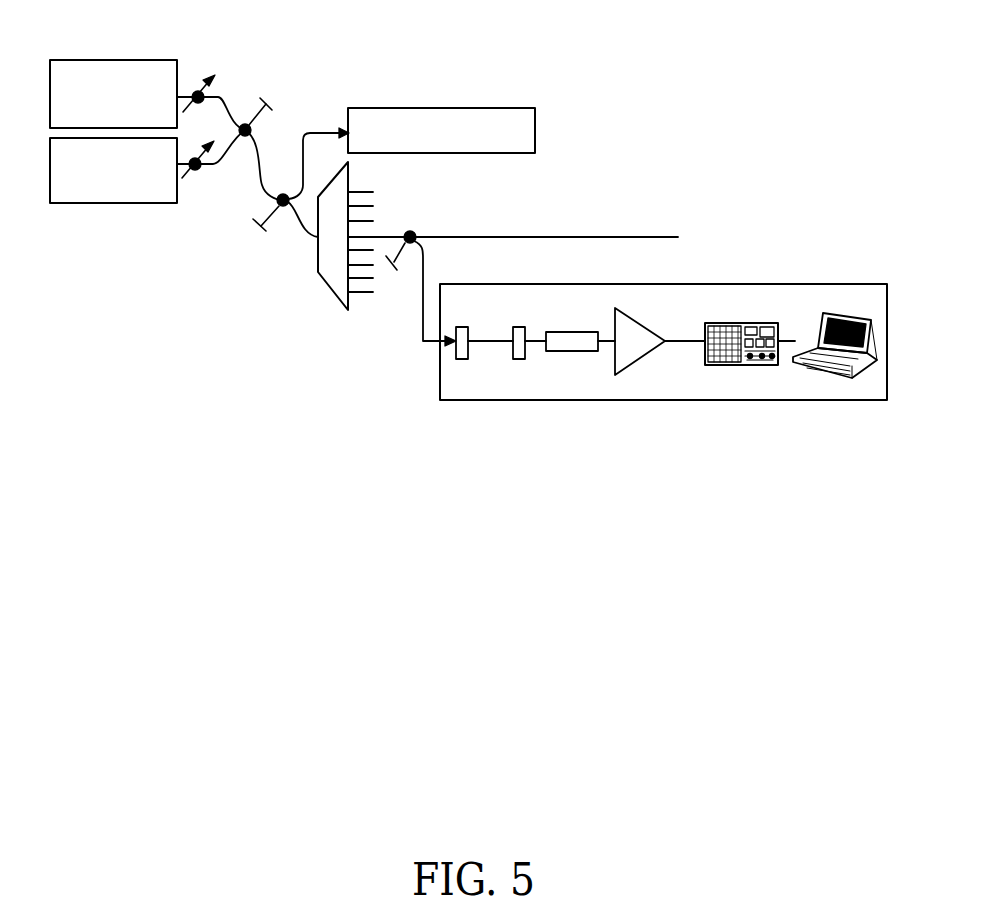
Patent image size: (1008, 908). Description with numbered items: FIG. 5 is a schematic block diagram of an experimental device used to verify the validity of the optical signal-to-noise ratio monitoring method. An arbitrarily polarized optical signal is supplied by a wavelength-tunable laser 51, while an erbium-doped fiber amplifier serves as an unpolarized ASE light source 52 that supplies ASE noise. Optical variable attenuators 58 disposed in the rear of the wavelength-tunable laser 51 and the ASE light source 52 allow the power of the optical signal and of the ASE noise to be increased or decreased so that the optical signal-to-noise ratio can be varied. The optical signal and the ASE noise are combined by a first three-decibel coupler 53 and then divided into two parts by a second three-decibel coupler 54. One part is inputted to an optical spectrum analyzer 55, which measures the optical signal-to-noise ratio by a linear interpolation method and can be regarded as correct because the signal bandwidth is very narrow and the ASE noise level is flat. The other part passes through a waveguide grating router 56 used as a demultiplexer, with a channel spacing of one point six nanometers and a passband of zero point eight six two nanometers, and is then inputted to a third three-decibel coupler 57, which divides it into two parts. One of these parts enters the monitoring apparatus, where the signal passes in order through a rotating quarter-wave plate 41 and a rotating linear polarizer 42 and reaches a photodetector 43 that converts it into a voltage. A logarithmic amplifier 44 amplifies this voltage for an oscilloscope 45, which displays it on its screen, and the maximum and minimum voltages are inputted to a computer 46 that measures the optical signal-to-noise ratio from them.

The quarter-wave plate 41 is at (452, 357).
The linear polarizer 42 is at (519, 359).
The photodetector 43 is at (572, 351).
The logarithmic amplifier 44 is at (637, 376).
The oscilloscope 45 is at (748, 364).
The computer 46 is at (826, 378).
The wavelength-tunable laser 51 is at (143, 60).
The ASE light source 52 is at (133, 203).
The 3-dB coupler 53 is at (252, 129).
The 3-dB coupler 54 is at (277, 200).
The optical spectrum analyzer 55 is at (535, 125).
The waveguide grating router 56 is at (323, 289).
The 3-dB coupler 57 is at (414, 231).
The optical variable attenuators 58 is at (194, 155).